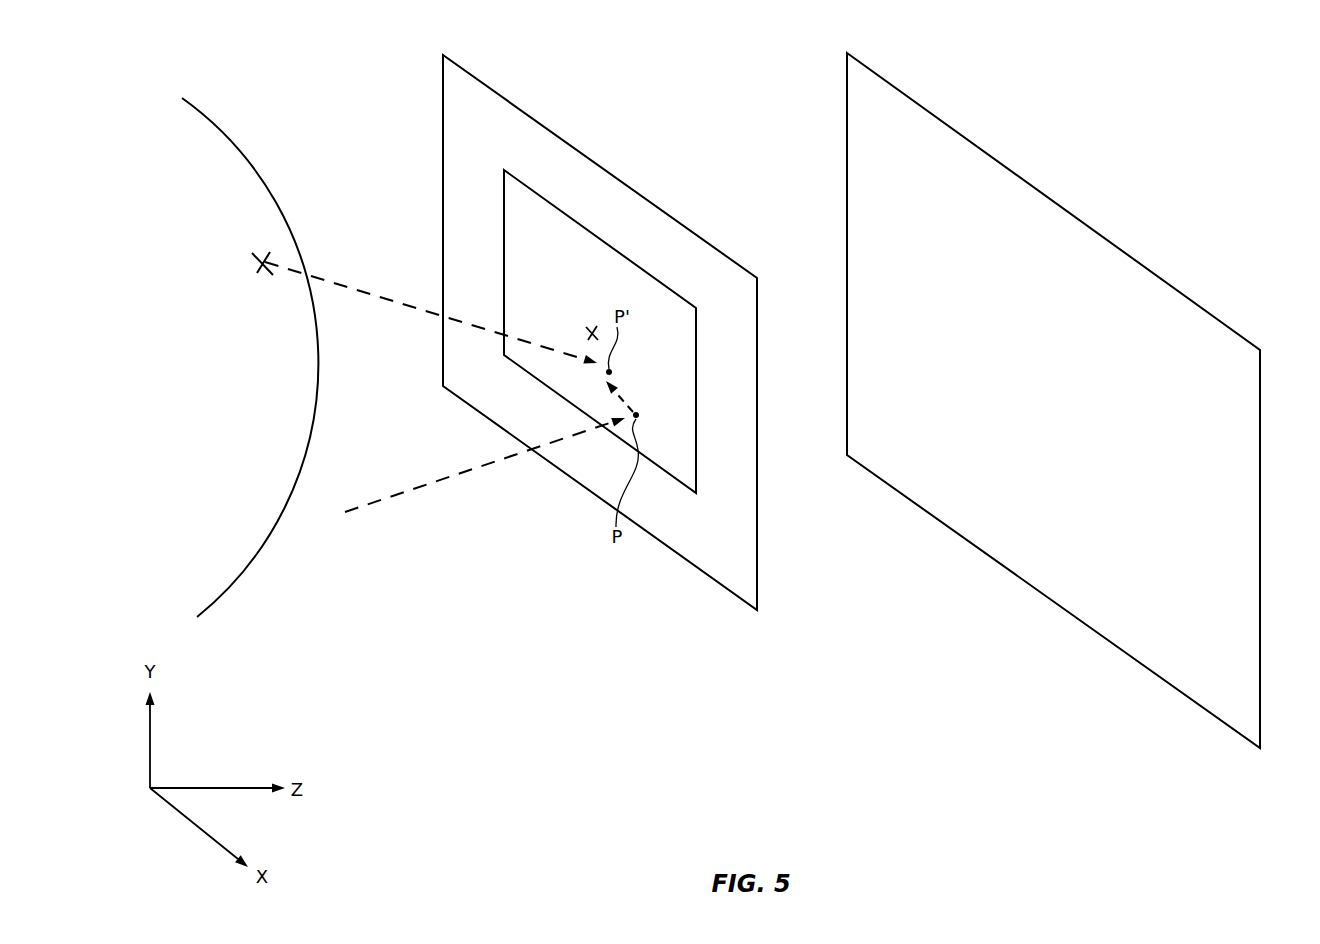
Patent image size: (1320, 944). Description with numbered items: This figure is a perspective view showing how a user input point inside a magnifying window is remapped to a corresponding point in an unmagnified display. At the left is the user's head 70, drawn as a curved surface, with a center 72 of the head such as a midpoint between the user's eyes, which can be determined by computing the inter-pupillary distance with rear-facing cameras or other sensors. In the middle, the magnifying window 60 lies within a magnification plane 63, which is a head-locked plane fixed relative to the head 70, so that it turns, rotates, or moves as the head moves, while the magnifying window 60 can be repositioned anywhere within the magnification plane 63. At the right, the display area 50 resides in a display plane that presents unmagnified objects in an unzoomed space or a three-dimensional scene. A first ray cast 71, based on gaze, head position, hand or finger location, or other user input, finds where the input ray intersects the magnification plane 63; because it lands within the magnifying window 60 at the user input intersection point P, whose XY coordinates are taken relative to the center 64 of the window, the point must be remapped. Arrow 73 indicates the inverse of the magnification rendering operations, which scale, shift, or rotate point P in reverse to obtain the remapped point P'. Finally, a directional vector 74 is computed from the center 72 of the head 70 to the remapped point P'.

The display area 50 is at (902, 93).
The magnifying window 60 is at (585, 230).
The magnification plane 63 is at (492, 90).
The center 64 is at (590, 306).
The head 70 is at (228, 138).
The ray cast 71 is at (422, 487).
The center 72 is at (252, 240).
The arrow 73 is at (615, 405).
The directional vector 74 is at (405, 308).